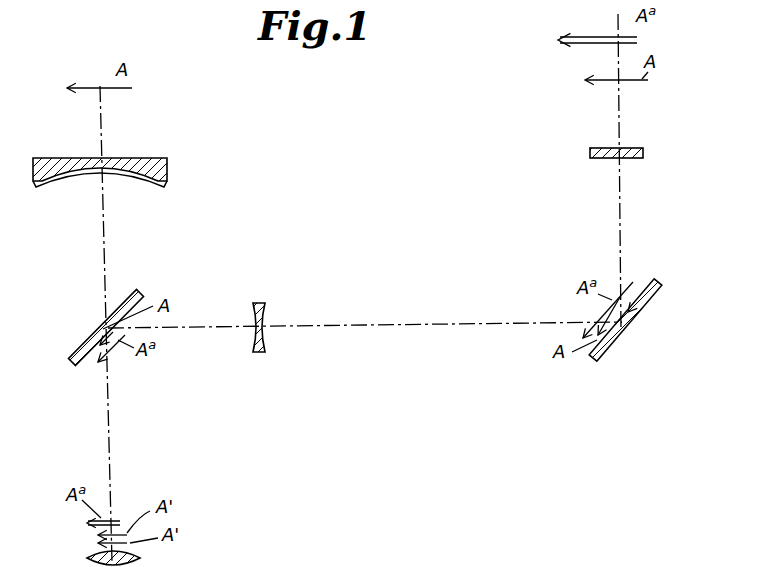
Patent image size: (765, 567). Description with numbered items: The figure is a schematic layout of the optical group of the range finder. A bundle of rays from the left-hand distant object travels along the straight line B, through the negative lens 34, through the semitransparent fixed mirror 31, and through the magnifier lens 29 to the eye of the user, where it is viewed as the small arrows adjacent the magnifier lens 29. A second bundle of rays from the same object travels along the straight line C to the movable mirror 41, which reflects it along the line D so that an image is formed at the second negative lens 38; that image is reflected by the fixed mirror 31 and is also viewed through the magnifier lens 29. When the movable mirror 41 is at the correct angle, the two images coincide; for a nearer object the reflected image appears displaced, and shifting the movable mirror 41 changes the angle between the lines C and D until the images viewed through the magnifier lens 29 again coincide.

The magnifier lens 29 is at (92, 556).
The fixed mirror 31 is at (118, 300).
The negative lens 34 is at (168, 164).
The second negative lens 38 is at (266, 312).
The movable mirror 41 is at (628, 328).
The line of rays B is at (102, 127).
The line of rays C is at (620, 210).
The line D is at (440, 323).